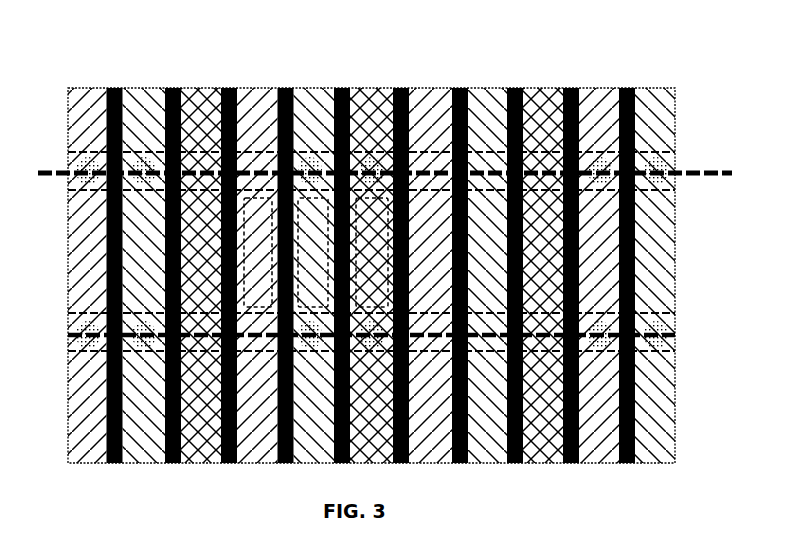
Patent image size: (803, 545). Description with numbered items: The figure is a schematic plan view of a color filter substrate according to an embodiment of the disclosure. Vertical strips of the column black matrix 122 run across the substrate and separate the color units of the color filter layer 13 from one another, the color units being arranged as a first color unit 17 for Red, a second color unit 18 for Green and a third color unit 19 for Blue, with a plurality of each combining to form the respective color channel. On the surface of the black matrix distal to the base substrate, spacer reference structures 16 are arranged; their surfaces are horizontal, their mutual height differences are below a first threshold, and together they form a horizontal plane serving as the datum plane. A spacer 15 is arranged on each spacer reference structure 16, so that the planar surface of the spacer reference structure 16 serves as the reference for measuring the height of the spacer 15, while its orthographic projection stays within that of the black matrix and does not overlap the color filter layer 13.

The color filter layer 13 is at (248, 257).
The spacer 15 is at (409, 148).
The spacer reference structure 16 is at (375, 152).
The first color unit 17 is at (326, 184).
The second color unit 18 is at (378, 184).
The third color unit 19 is at (276, 183).
The column black matrix 122 is at (371, 240).